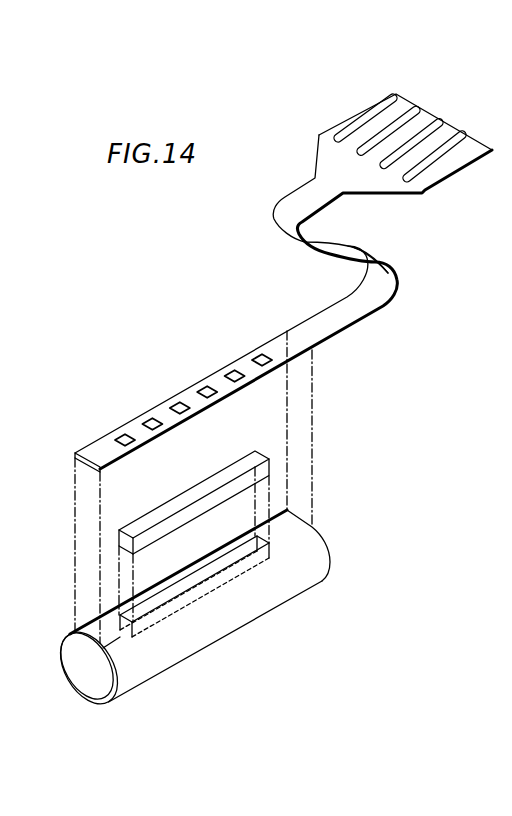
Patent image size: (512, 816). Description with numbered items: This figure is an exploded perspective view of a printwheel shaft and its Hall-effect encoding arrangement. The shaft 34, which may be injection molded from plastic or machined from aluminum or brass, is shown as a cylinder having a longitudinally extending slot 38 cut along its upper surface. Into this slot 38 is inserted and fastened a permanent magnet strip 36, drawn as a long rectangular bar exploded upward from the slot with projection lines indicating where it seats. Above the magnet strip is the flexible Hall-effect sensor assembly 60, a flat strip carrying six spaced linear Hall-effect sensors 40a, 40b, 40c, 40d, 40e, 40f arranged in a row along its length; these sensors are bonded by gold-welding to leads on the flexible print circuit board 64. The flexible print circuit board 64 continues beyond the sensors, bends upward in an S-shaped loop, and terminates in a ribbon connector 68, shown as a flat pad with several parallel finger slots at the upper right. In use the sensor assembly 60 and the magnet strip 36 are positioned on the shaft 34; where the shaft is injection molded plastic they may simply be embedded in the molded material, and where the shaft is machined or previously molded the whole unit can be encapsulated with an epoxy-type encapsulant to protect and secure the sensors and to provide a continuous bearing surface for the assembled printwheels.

The shaft 34 is at (93, 704).
The permanent magnet strip 36 is at (269, 465).
The longitudinally extending slot 38 is at (218, 568).
The linear Hall-effect sensor 40a is at (117, 435).
The linear Hall-effect sensor 40b is at (147, 420).
The linear Hall-effect sensor 40c is at (178, 404).
The linear Hall-effect sensor 40d is at (207, 388).
The linear Hall-effect sensor 40e is at (235, 372).
The linear Hall-effect sensor 40f is at (263, 355).
The flexible Hall-effect sensor assembly 60 is at (147, 389).
The flexible print circuit board 64 is at (398, 276).
The ribbon connector 68 is at (438, 122).